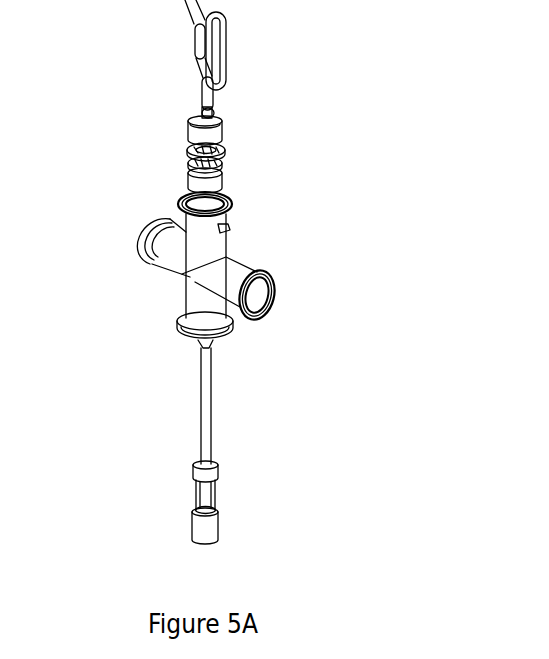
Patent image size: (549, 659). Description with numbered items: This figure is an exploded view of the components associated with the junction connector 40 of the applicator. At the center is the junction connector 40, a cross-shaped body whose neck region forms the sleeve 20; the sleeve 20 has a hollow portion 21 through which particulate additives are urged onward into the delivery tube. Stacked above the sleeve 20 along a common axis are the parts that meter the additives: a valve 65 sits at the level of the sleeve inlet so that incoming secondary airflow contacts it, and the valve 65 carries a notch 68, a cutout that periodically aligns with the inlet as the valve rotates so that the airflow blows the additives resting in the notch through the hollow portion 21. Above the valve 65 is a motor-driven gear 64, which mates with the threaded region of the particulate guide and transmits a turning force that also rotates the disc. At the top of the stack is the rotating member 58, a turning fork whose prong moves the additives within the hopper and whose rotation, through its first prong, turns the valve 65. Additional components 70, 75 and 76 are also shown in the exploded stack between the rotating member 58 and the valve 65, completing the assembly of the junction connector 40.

The rotating member 58 is at (220, 56).
The cap 76 is at (198, 121).
The cap lip 75 is at (216, 134).
The notch 68 is at (227, 150).
The washer insert 70 is at (190, 151).
The valve 65 is at (225, 162).
The motor-driven gear 64 is at (225, 188).
The hollow portion 21 is at (180, 207).
The sleeve 20 is at (215, 245).
The junction connector 40 is at (147, 288).